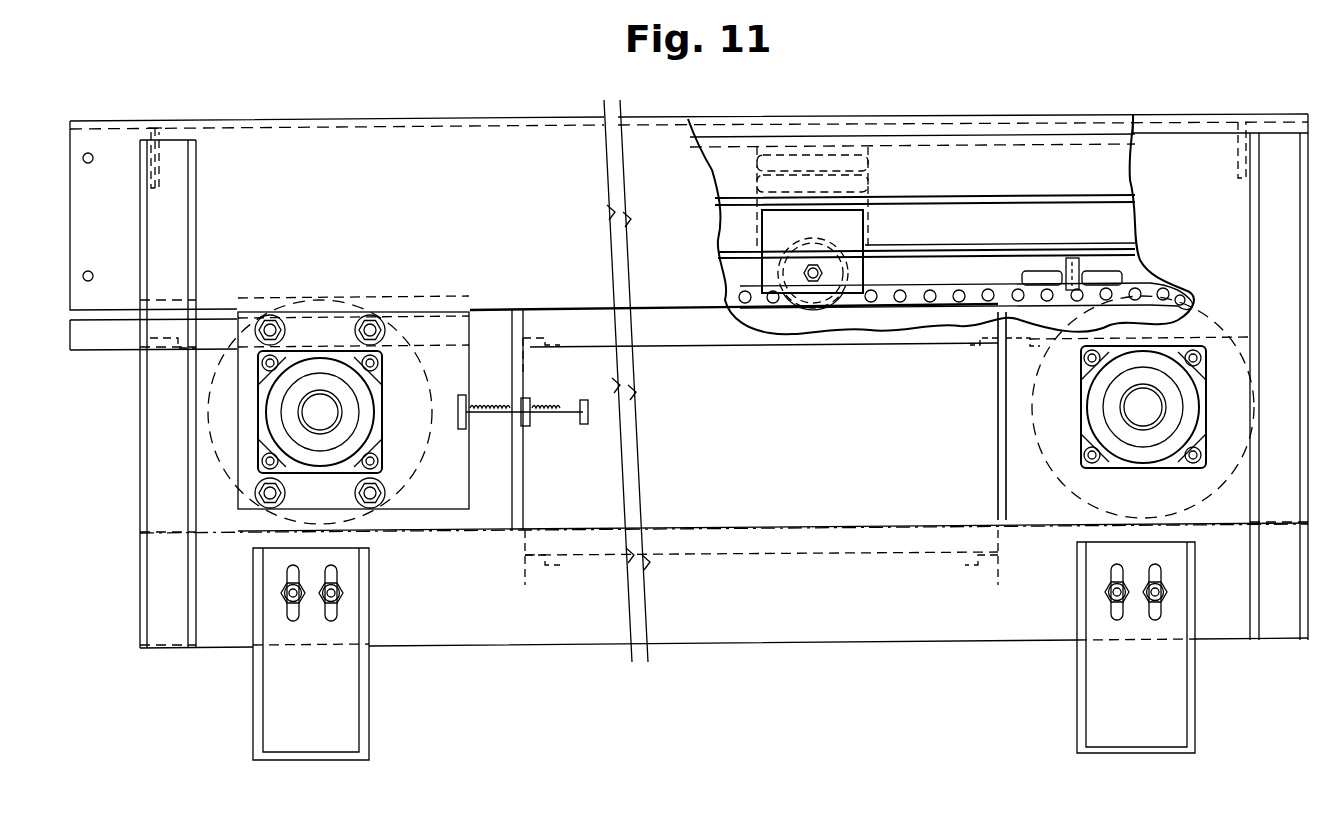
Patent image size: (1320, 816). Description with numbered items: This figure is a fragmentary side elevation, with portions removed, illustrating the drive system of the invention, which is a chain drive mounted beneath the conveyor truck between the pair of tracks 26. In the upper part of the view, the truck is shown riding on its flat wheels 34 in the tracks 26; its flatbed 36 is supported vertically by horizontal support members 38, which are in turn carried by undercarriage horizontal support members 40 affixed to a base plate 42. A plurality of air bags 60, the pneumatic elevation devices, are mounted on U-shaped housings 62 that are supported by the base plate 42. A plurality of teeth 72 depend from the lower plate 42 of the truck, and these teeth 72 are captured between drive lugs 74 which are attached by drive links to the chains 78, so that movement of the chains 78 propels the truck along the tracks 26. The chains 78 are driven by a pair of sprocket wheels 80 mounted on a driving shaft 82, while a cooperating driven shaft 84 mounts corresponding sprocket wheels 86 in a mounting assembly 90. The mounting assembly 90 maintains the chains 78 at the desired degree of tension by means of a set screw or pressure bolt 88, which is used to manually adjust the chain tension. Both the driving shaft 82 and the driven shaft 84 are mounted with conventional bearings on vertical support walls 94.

The tracks 26 is at (867, 313).
The flat wheels 34 is at (833, 310).
The flatbed 36 is at (976, 139).
The horizontal support members 38 is at (925, 182).
The horizontal support members 40 is at (926, 235).
The base plate 42 is at (950, 252).
The air bags 60 is at (870, 163).
The U-shaped housings 62 is at (870, 188).
The teeth 72 is at (1074, 258).
The drive lugs 74 is at (1147, 257).
The chains 78 is at (1158, 292).
The sprocket wheels 80 is at (1243, 437).
The driving shaft 82 is at (1143, 407).
The driven shaft 84 is at (320, 412).
The sprocket wheels 86 is at (216, 399).
The set screw or pressure bolt 88 is at (556, 408).
The mounting assembly 90 is at (353, 402).
The vertical support walls 94 is at (785, 416).